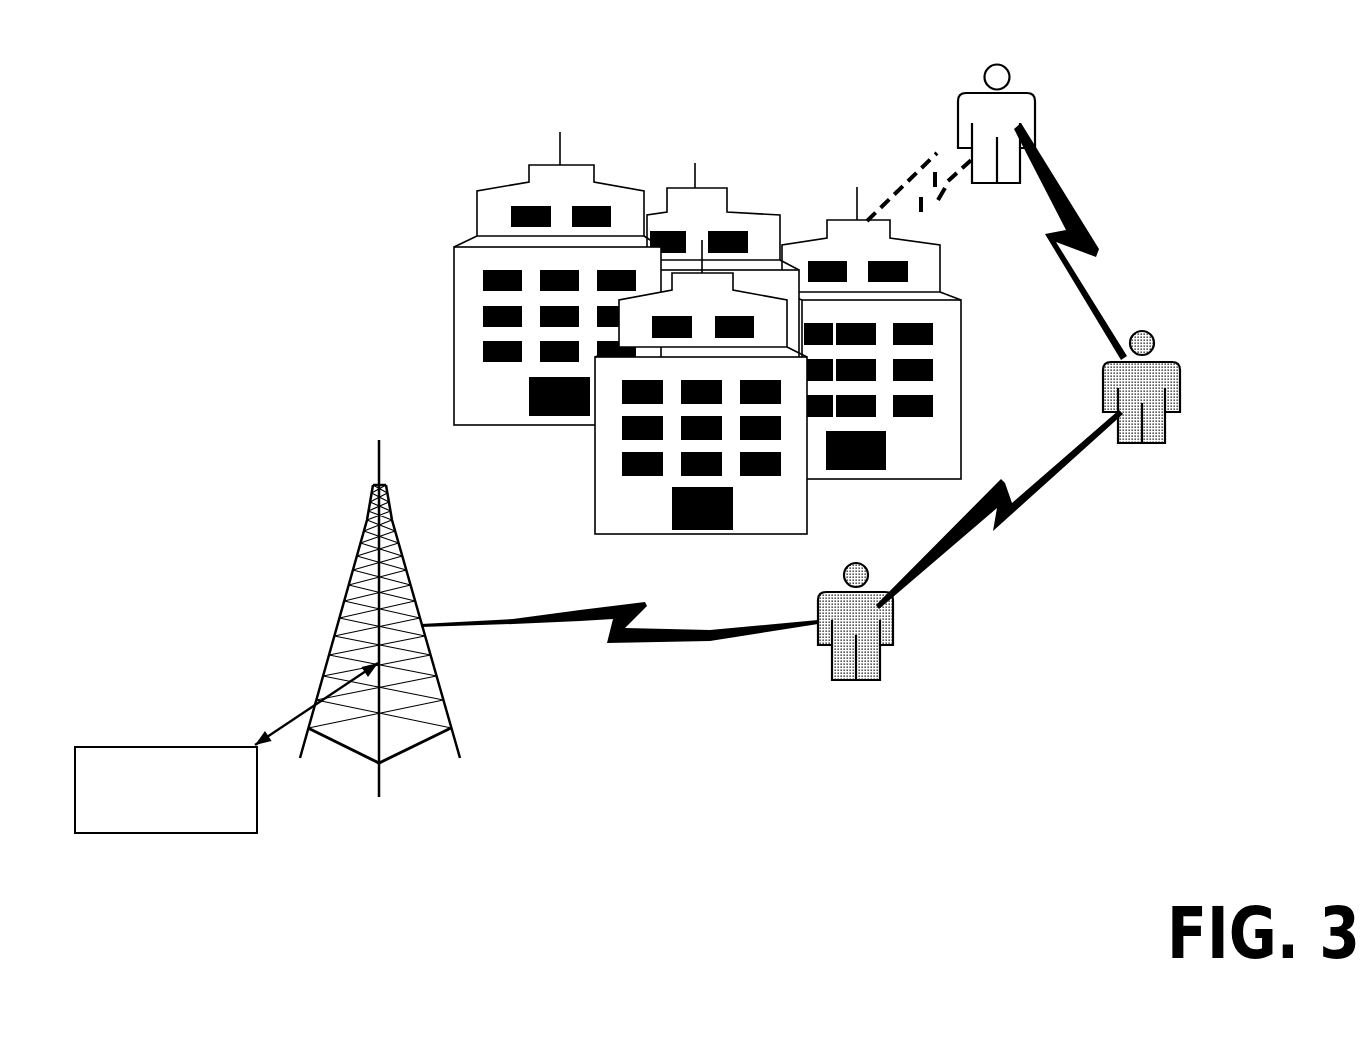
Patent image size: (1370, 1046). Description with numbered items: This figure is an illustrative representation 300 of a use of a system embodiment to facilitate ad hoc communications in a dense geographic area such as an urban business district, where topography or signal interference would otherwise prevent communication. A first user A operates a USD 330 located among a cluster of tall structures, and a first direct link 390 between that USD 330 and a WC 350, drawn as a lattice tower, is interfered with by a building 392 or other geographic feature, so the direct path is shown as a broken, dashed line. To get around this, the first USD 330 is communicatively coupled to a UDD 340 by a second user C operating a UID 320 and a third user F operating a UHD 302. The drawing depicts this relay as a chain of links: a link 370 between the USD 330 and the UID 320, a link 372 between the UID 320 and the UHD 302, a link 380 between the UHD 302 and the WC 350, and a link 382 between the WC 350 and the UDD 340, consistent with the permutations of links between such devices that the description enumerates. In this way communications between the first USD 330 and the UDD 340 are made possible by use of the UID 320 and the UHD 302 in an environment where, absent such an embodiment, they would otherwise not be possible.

The environment / system 300 is at (1212, 98).
The UHD 302 is at (885, 628).
The UID 320 is at (1168, 383).
The USD 330 is at (1018, 110).
The UDD 340 is at (166, 790).
The WC 350 is at (355, 650).
The communication link between A and C 370 is at (1080, 232).
The communication link between C and F 372 is at (1038, 492).
The communication link between tower and F 380 is at (518, 623).
The communication link between tower and UDD 382 is at (305, 712).
The first direct link 390 is at (907, 180).
The building 392 is at (823, 250).